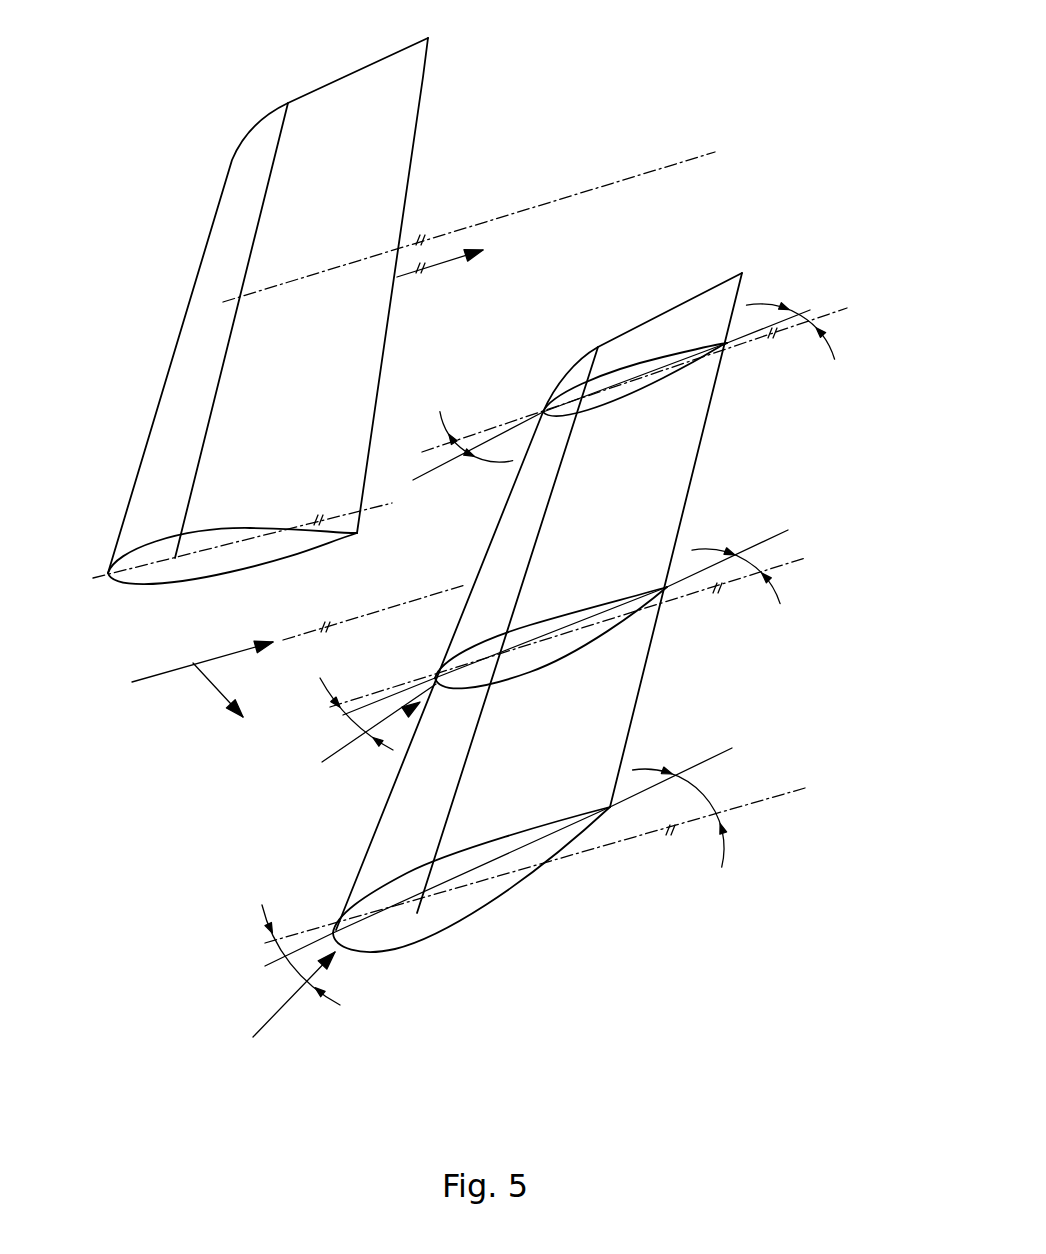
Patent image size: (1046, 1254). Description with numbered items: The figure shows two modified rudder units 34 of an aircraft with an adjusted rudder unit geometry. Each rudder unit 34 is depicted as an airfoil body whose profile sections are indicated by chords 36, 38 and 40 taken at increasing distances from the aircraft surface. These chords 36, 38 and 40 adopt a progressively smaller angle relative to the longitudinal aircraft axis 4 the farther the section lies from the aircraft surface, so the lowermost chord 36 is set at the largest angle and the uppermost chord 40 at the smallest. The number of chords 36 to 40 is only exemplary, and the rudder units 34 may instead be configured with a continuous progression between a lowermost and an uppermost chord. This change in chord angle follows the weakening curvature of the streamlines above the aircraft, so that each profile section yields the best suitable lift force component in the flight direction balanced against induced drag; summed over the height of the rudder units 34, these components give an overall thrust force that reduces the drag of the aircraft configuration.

The longitudinal aircraft axis 4 is at (152, 678).
The rudder unit 34 is at (373, 92).
The chord 36 is at (727, 750).
The chord 38 is at (733, 552).
The chord 40 is at (757, 328).